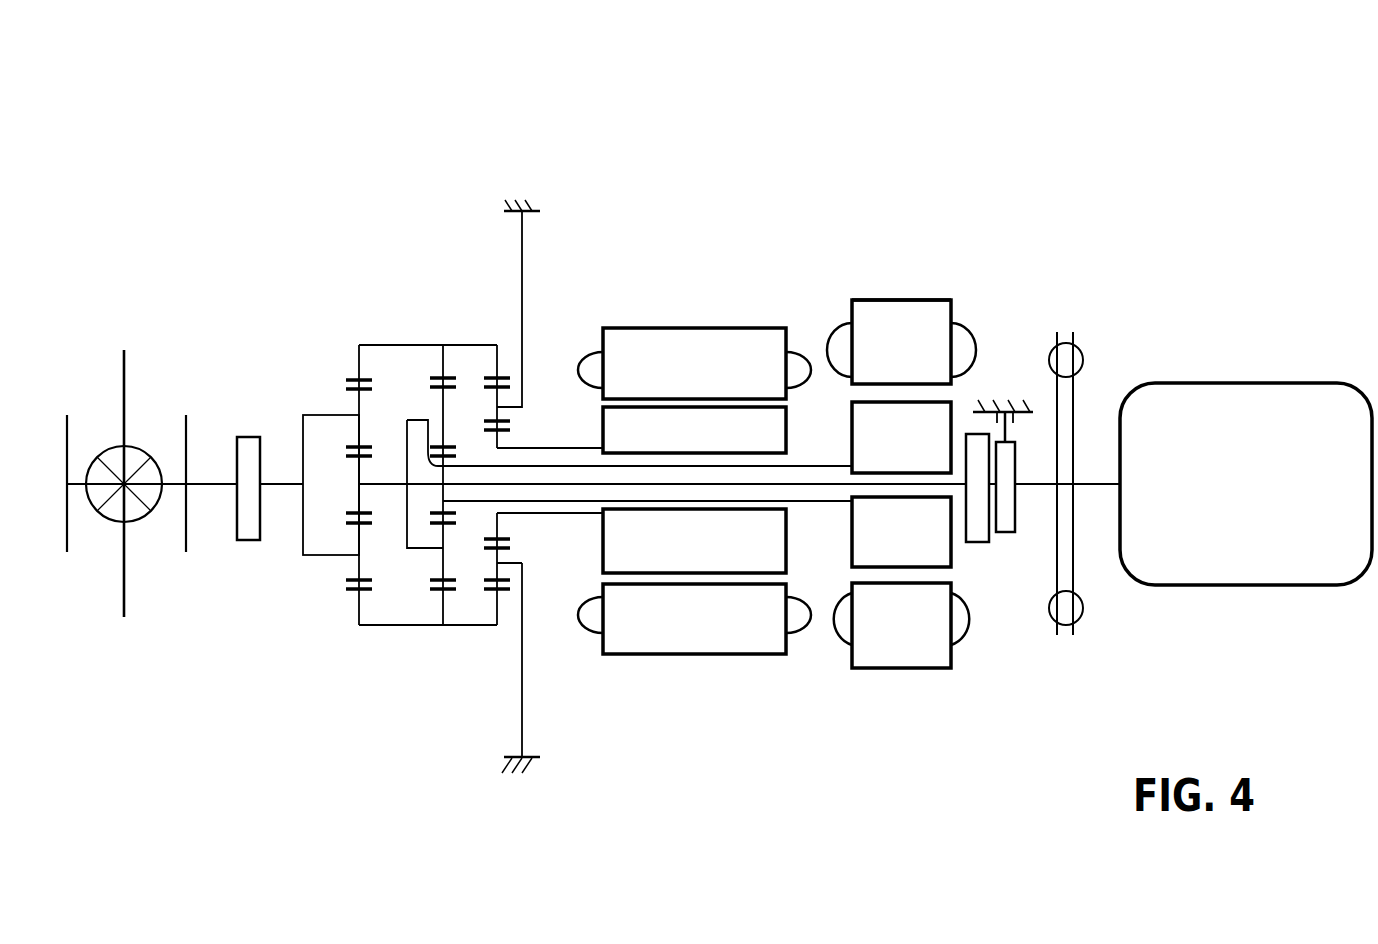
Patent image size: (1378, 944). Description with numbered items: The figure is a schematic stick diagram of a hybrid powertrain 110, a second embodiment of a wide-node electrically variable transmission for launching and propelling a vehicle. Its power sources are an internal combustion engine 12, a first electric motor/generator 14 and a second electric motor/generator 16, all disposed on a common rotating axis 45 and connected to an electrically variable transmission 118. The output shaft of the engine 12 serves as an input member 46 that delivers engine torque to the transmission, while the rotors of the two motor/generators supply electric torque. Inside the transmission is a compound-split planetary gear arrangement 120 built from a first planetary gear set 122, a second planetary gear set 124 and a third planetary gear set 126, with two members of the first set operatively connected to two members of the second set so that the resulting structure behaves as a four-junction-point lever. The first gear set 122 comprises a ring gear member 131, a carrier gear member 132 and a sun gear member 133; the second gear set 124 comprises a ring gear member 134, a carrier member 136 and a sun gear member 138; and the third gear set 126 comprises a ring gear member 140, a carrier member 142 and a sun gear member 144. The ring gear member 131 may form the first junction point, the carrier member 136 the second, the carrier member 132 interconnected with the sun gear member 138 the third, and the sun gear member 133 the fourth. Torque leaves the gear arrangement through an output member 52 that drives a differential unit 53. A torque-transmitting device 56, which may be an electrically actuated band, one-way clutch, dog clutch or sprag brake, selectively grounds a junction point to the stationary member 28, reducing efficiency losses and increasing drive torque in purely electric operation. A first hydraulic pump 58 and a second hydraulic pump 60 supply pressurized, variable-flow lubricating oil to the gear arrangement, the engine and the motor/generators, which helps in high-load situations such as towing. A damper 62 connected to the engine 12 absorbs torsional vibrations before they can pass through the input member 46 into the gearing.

The internal combustion engine 12 is at (1230, 587).
The first electric motor/generator 14 is at (852, 547).
The second electric motor/generator 16 is at (603, 558).
The stationary member 28 is at (540, 760).
The common rotating axis 45 is at (75, 487).
The input member 46 is at (1090, 487).
The output member 52 is at (213, 486).
The differential unit 53 is at (112, 446).
The torque-transmitting device 56 is at (1003, 532).
The first hydraulic pump 58 is at (978, 542).
The second hydraulic pump 60 is at (243, 542).
The damper 62 is at (1083, 355).
The hybrid powertrain 110 is at (963, 287).
The electrically variable transmission 118 is at (558, 150).
The compound-split planetary gear arrangement 120 is at (483, 247).
The first planetary gear set 122 is at (448, 327).
The second planetary gear set 124 is at (343, 340).
The third planetary gear set 126 is at (485, 317).
The ring gear member 131 is at (438, 376).
The carrier gear member 132 is at (428, 420).
The sun gear member 133 is at (413, 420).
The ring gear member 134 is at (346, 380).
The carrier member 136 is at (342, 413).
The sun gear member 138 is at (353, 456).
The ring gear member 140 is at (502, 377).
The carrier member 142 is at (516, 409).
The sun gear member 144 is at (497, 437).